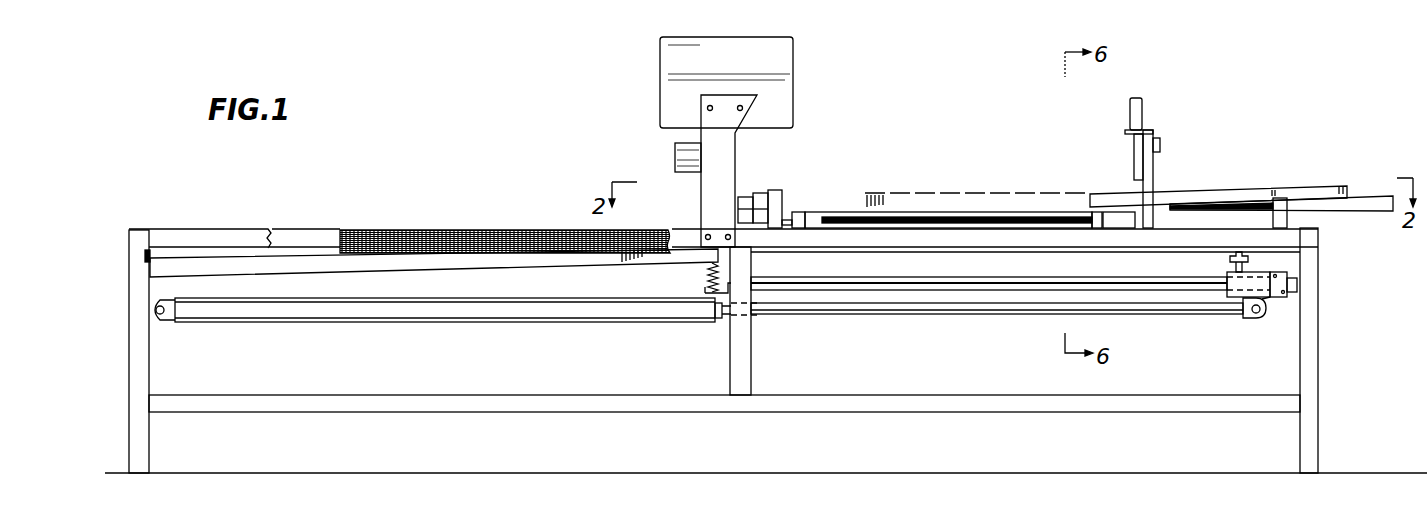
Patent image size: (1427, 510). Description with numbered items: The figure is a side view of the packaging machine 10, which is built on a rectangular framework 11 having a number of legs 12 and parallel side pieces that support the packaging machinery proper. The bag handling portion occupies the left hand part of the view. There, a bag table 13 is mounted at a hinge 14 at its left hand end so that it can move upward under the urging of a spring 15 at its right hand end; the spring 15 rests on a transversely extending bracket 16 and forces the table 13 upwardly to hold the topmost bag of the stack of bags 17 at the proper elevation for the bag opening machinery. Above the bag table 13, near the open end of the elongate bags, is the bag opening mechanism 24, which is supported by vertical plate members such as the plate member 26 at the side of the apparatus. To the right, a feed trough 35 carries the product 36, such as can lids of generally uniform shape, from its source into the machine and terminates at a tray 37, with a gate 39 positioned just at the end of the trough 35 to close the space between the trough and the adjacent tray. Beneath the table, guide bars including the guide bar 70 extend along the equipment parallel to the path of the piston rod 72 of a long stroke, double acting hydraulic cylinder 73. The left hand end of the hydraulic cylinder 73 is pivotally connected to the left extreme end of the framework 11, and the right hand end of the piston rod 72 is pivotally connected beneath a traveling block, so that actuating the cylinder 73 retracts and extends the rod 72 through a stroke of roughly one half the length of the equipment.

The packaging machine 10 is at (531, 93).
The rectangular framework 11 is at (293, 414).
The legs 12 is at (152, 452).
The bag table 13 is at (309, 276).
The hinge 14 is at (153, 256).
The spring 15 is at (707, 275).
The transversely extending bracket 16 is at (707, 293).
The stack of bags 17 is at (358, 236).
The bag opening mechanism 24 is at (833, 110).
The vertical plate member 26 is at (725, 158).
The feed trough 35 is at (1353, 213).
The product 36 is at (1297, 187).
The tray 37 is at (838, 210).
The gate 39 is at (1133, 171).
The guide bar 70 is at (851, 285).
The piston rod 72 is at (903, 318).
The hydraulic cylinder 73 is at (489, 321).